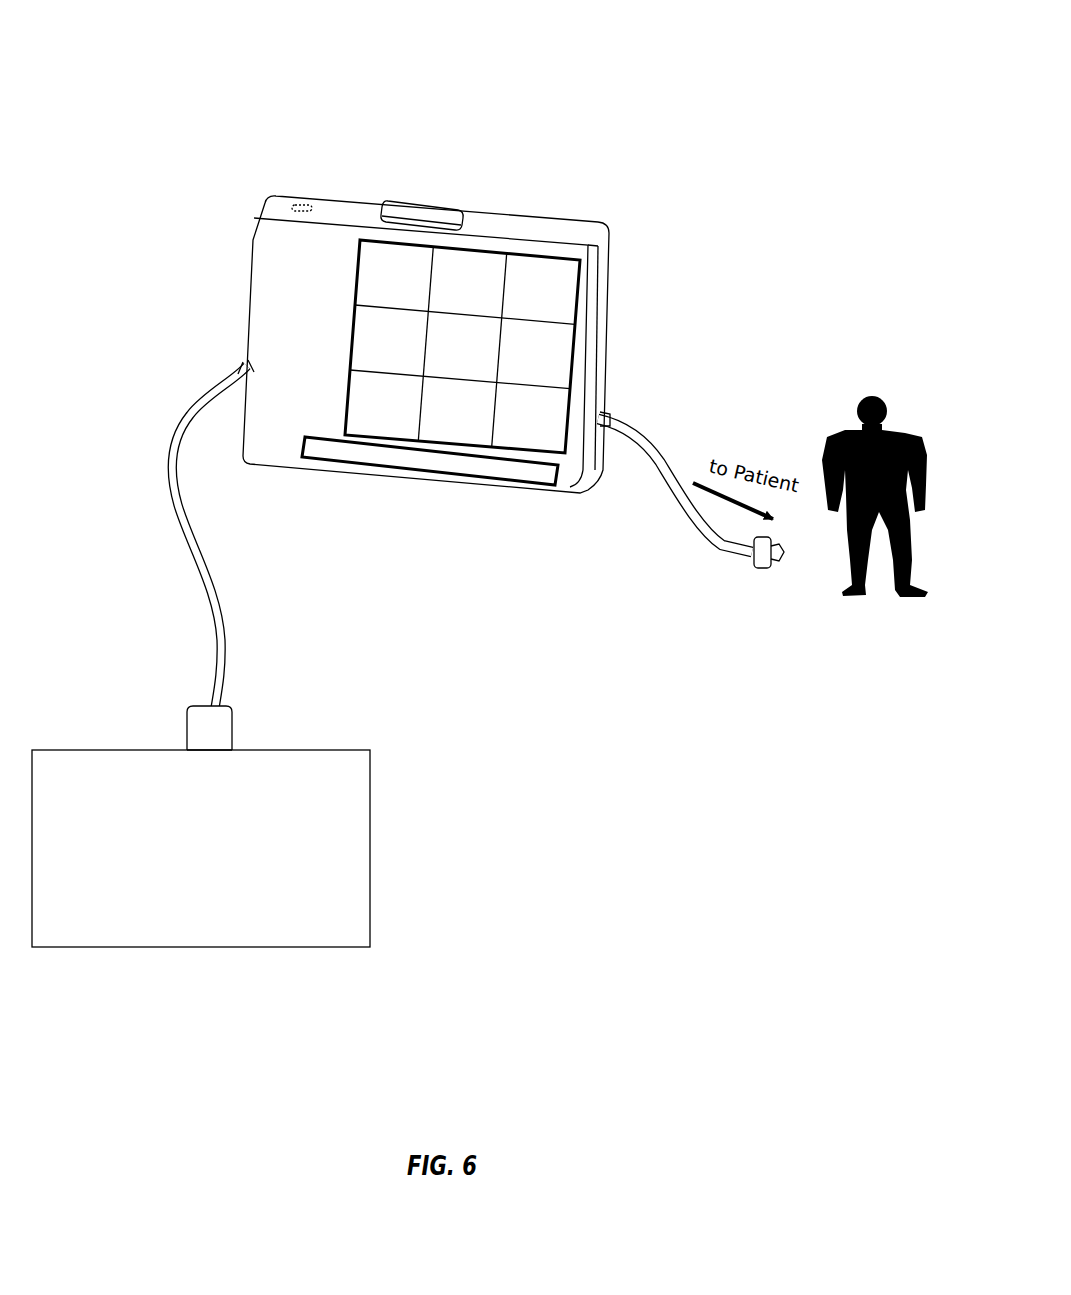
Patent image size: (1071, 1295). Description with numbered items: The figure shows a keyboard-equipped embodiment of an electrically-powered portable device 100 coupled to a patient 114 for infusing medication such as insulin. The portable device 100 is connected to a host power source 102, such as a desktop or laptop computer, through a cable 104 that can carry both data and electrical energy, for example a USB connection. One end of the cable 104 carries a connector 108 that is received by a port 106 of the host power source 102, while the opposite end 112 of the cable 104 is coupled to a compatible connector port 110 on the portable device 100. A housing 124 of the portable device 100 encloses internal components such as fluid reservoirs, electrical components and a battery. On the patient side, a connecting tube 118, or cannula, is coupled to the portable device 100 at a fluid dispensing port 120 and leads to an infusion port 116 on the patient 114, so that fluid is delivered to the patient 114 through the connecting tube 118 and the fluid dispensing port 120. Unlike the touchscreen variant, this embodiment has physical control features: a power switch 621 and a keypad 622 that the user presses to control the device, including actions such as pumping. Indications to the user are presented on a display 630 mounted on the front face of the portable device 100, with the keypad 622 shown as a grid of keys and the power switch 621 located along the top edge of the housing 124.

The portable device 100 is at (642, 191).
The host power source 102 is at (201, 848).
The cable 104 is at (202, 557).
The port 106 is at (222, 756).
The connector 108 is at (185, 732).
The connector port 110 is at (254, 361).
The opposite end 112 is at (245, 361).
The patient 114 is at (895, 567).
The infusion port 116 is at (763, 570).
The connecting tube 118 is at (687, 525).
The fluid dispensing port 120 is at (603, 415).
The housing 124 is at (247, 470).
The power switch 621 is at (433, 205).
The keypad 622 is at (347, 297).
The display 630 is at (435, 473).